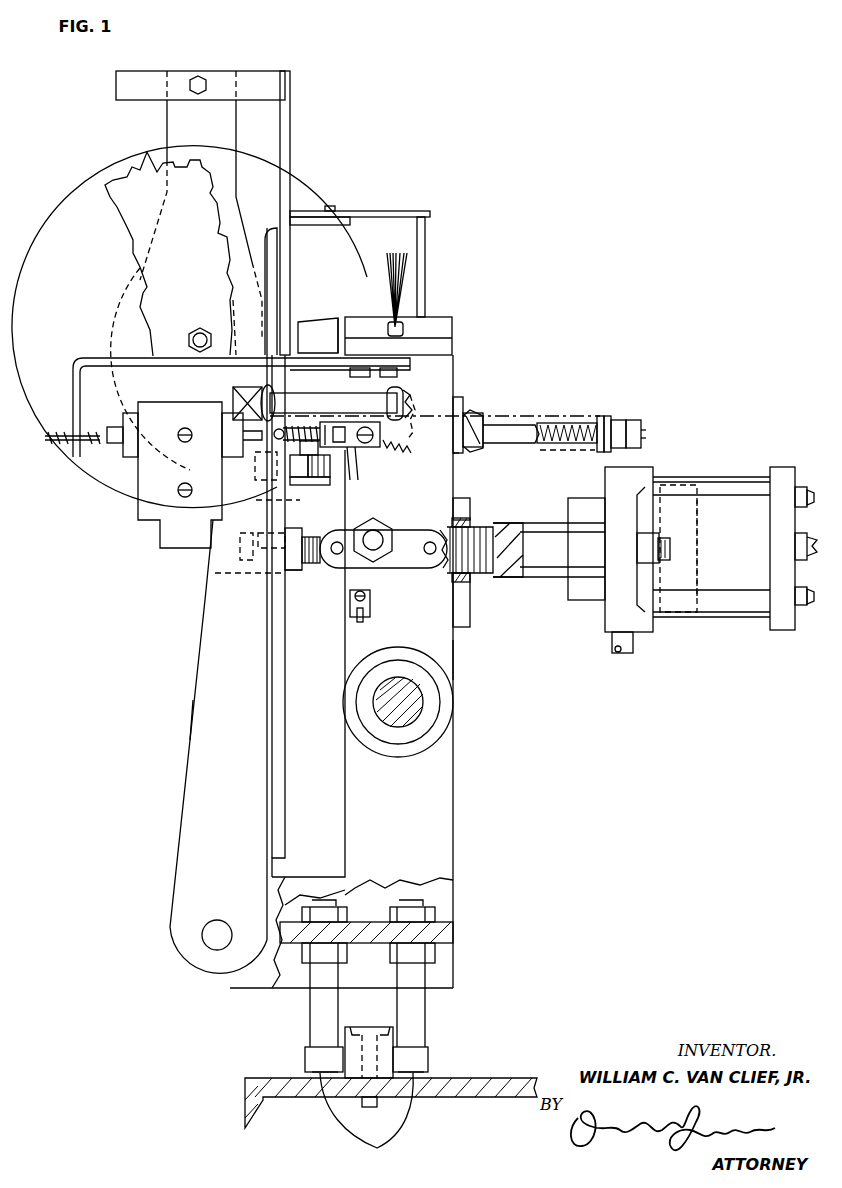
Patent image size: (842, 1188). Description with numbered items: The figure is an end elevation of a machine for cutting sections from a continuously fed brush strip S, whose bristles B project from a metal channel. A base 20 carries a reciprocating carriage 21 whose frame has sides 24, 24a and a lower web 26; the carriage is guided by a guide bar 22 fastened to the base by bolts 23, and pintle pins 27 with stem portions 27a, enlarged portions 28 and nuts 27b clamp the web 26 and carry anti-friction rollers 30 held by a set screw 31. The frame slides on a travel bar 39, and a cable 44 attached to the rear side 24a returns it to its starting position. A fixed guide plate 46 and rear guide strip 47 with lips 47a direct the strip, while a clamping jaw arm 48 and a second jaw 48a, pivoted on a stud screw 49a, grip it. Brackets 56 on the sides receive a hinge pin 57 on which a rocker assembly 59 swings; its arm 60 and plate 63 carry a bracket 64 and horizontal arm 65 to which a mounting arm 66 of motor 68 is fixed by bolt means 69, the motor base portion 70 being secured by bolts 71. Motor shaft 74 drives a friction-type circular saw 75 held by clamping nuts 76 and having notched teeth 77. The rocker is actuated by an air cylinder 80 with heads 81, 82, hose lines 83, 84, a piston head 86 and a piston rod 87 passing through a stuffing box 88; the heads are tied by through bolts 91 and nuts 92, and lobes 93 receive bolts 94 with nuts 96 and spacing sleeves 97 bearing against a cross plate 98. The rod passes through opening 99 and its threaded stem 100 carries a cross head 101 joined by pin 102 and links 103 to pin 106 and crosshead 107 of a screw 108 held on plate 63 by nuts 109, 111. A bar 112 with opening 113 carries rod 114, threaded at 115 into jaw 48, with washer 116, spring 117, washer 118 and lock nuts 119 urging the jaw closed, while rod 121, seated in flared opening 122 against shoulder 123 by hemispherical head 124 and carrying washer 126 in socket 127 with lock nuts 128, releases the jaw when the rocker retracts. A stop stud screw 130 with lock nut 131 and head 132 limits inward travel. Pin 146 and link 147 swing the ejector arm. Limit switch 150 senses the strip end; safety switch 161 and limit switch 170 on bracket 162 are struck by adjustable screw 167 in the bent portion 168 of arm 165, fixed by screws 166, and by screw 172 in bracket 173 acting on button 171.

The base 20 is at (245, 1093).
The carriage 21 is at (460, 660).
The guide bar 22 is at (393, 1032).
The bolts 23 is at (372, 1113).
The side 24 is at (453, 888).
The side 24a is at (450, 808).
The lower crossbar 26 is at (455, 931).
The pintle pins 27 is at (397, 1003).
The stem portions 27a is at (340, 890).
The nuts 27b is at (395, 908).
The enlarged intermediate portions 28 is at (380, 960).
The anti-friction rollers 30 is at (303, 1056).
The set screw 31 is at (377, 1148).
The travel bar 39 is at (410, 702).
The cable 44 is at (363, 620).
The fixed guide plate 46 is at (352, 318).
The rear fixed guide strip 47 is at (452, 325).
The lips 47a is at (405, 325).
The clamping jaw arm 48 is at (352, 381).
The jaw 48a is at (318, 320).
The stud screw 49a is at (375, 530).
The brackets 56 is at (300, 982).
The hinge pin 57 is at (202, 937).
The rocker assembly 59 is at (172, 810).
The arm 60 is at (185, 771).
The plate 63 is at (282, 810).
The bracket 64 is at (290, 126).
The horizontally extending arm 65 is at (252, 80).
The mounting arm 66 is at (165, 124).
The saw-driving motor 68 is at (122, 330).
The bolt means 69 is at (200, 78).
The base portion 70 is at (246, 278).
The bolts 71 is at (248, 300).
The shaft 74 is at (194, 332).
The circular saw 75 is at (110, 197).
The clamping nuts 76 is at (201, 332).
The teeth 77 is at (169, 248).
The air cylinder 80 is at (717, 598).
The cylinder head 81 is at (782, 630).
The cylinder head 82 is at (610, 625).
The hose line 83 is at (797, 540).
The hose line 84 is at (633, 648).
The piston head 86 is at (685, 612).
The piston rod 87 is at (515, 530).
The stuffing box 88 is at (576, 498).
The through bolts 91 is at (733, 493).
The nuts 92 is at (800, 486).
The projecting lobes 93 is at (617, 590).
The bolts 94 is at (670, 546).
The nuts 96 is at (656, 535).
The spacing sleeves 97 is at (510, 578).
The cross plate 98 is at (470, 618).
The opening 99 is at (478, 523).
The threaded stem 100 is at (488, 528).
The cross head 101 is at (384, 569).
The connecting pin 102 is at (437, 515).
The links 103 is at (318, 568).
The pin 106 is at (340, 556).
The crosshead 107 is at (298, 572).
The screw 108 is at (302, 585).
The nut 109 is at (231, 569).
The nut 111 is at (290, 575).
The bar 112 is at (458, 398).
The opening 113 is at (475, 416).
The rod 114 is at (575, 422).
The screw-threaded extremity 115 is at (402, 452).
The washer 116 is at (465, 418).
The helical spring 117 is at (465, 452).
The washer 118 is at (610, 415).
The lock nuts 119 is at (625, 418).
The rod 121 is at (300, 398).
The flared opening 122 is at (322, 426).
The rounded shoulder 123 is at (372, 440).
The hemispherical head 124 is at (400, 393).
The washer 126 is at (258, 462).
The socket 127 is at (277, 365).
The lock nuts 128 is at (233, 392).
The stud screw 130 is at (305, 486).
The lock nut 131 is at (300, 495).
The head portion 132 is at (315, 486).
The vertical pin 146 is at (425, 242).
The link 147 is at (398, 210).
The limit switch 150 is at (470, 410).
The safety switch 161 is at (135, 465).
The bracket 162 is at (235, 550).
The arm 165 is at (83, 358).
The screws 166 is at (392, 372).
The adjustable screw 167 is at (95, 430).
The downwardly bent portion 168 is at (73, 398).
The limit switch 170 is at (225, 452).
The button 171 is at (232, 438).
The adjustable screw 172 is at (350, 471).
The bracket 173 is at (372, 447).
The bristles B is at (402, 270).
The brush strip S is at (406, 328).